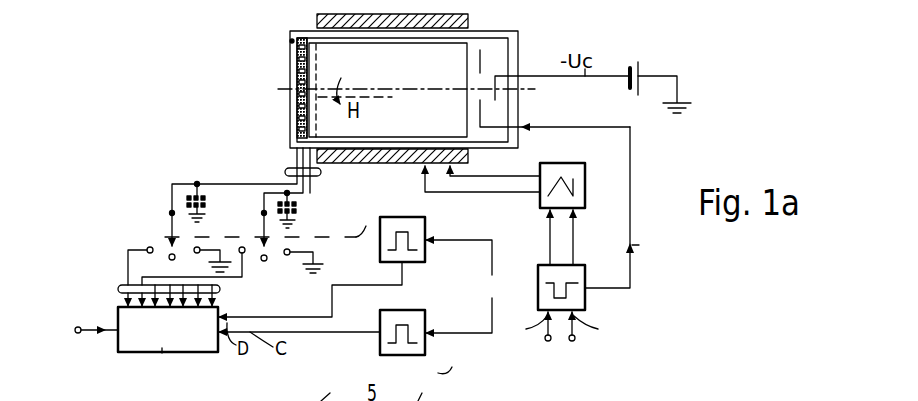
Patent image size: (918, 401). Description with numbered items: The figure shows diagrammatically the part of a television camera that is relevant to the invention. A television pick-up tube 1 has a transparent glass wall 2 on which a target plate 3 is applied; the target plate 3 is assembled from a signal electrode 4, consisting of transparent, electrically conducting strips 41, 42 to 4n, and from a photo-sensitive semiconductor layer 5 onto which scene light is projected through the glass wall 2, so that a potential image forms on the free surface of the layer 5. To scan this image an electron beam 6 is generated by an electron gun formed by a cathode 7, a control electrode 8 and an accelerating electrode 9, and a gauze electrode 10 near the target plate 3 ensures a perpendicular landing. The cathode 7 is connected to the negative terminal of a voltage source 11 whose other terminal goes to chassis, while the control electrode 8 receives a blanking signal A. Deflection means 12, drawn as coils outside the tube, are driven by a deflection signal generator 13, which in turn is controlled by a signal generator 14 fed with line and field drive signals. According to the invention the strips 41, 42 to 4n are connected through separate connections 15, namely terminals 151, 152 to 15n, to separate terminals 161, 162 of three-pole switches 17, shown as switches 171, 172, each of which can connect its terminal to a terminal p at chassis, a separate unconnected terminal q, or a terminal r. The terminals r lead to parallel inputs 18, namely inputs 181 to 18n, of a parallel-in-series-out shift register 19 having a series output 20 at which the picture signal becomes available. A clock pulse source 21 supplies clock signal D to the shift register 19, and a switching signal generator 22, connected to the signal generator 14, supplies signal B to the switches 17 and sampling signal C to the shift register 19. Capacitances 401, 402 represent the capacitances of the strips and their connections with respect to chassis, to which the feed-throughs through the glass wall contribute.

The television pick-up tube 1 is at (506, 31).
The transparent glass wall 2 is at (291, 40).
The target plate 3 is at (286, 147).
The signal electrode 4 is at (256, 86).
The signal electrode strip 41 is at (298, 48).
The signal electrode strip 42 is at (298, 60).
The signal electrode strip 4n is at (274, 115).
The photo-sensitive semiconductor layer 5 is at (309, 42).
The electron beam 6 is at (392, 97).
The cathode 7 is at (500, 75).
The control electrode 8 is at (480, 101).
The accelerating electrode 9 is at (467, 63).
The gauze electrode 10 is at (318, 56).
The voltage source 11 is at (634, 61).
The deflection means 12 is at (393, 164).
The deflection signal generator 13 is at (672, 158).
The signal generator 14 is at (672, 277).
The connections 15 is at (268, 178).
The terminal 151 is at (212, 183).
The terminal 152 is at (288, 186).
The terminal 15n is at (311, 186).
The switch terminal 161 is at (170, 212).
The switch terminal 162 is at (262, 213).
The switches 17 is at (224, 245).
The three-pole switch 171 is at (168, 233).
The three-pole switch 172 is at (239, 235).
The parallel inputs 18 is at (169, 282).
The parallel input 181 is at (121, 291).
The parallel input 18n is at (219, 303).
The shift register 19 is at (143, 400).
The series output 20 is at (76, 328).
The clock pulse source 21 is at (426, 348).
The switching signal generator 22 is at (485, 362).
The capacitance 401 is at (187, 197).
The capacitance 402 is at (297, 212).